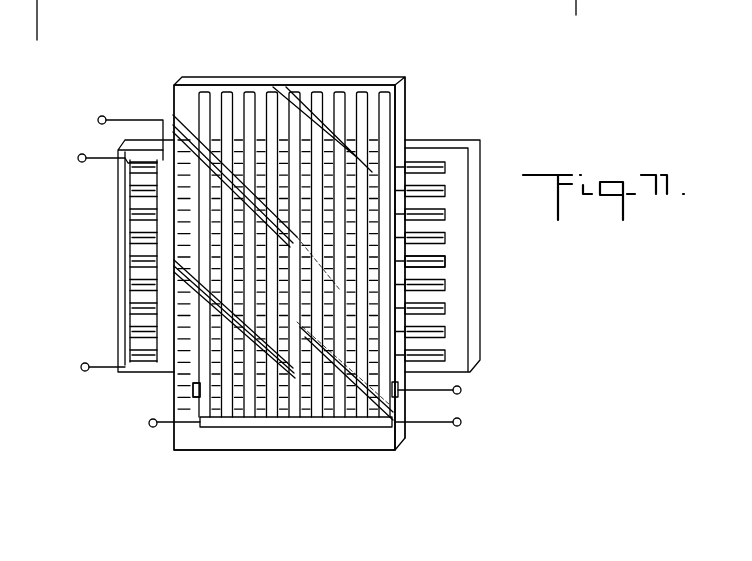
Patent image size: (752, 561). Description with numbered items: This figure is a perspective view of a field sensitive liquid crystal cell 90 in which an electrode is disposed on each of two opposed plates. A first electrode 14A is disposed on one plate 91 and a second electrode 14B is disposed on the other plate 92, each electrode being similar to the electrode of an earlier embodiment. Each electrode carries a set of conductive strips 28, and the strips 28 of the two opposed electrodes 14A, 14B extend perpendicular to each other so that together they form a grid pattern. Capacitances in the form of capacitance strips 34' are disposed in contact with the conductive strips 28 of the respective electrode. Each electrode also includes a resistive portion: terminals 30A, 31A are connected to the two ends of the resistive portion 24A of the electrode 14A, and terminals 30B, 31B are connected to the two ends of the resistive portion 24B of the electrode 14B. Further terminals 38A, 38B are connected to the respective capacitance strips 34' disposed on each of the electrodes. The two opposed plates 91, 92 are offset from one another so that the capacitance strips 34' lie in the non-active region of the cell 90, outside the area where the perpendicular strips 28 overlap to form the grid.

The field sensitive cell 90 is at (400, 72).
The electrode 14A is at (300, 80).
The electrode 14B is at (452, 311).
The conductive strips 28 is at (204, 93).
The resistive portion 24A is at (328, 428).
The resistive portion 24B is at (125, 230).
The plate 91 is at (398, 107).
The plate 92 is at (478, 155).
The capacitance strips 34' is at (122, 282).
The terminal 38A is at (461, 390).
The terminal 38B is at (101, 116).
The terminal 30A is at (461, 423).
The terminal 30B is at (79, 155).
The terminal 31A is at (151, 427).
The terminal 31B is at (84, 363).